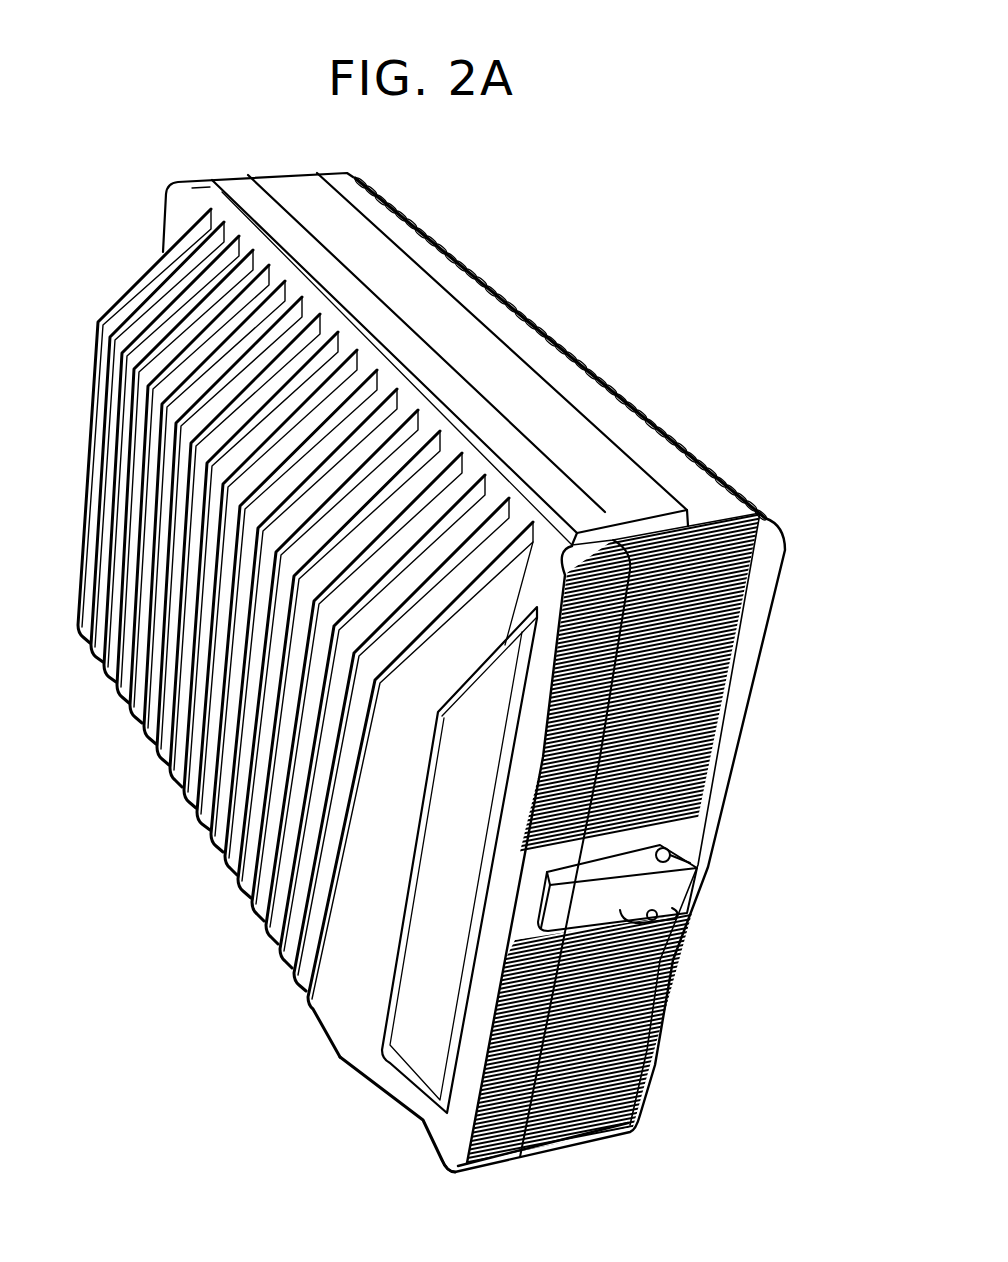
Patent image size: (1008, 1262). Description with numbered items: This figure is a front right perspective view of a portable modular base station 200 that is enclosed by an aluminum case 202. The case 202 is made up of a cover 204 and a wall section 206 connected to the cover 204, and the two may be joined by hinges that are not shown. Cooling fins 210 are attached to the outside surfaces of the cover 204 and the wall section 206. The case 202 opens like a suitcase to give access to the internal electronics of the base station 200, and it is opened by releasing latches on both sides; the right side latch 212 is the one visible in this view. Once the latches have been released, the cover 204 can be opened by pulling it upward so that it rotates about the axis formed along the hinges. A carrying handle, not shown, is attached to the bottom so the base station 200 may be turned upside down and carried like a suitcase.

The portable modular base station 200 is at (662, 268).
The aluminum case 202 is at (142, 208).
The cover 204 is at (440, 1128).
The wall section 206 is at (785, 590).
The cooling fins 210 is at (717, 517).
The right side latch 212 is at (697, 889).